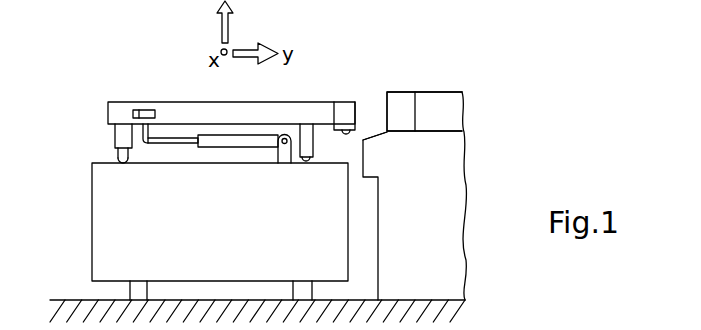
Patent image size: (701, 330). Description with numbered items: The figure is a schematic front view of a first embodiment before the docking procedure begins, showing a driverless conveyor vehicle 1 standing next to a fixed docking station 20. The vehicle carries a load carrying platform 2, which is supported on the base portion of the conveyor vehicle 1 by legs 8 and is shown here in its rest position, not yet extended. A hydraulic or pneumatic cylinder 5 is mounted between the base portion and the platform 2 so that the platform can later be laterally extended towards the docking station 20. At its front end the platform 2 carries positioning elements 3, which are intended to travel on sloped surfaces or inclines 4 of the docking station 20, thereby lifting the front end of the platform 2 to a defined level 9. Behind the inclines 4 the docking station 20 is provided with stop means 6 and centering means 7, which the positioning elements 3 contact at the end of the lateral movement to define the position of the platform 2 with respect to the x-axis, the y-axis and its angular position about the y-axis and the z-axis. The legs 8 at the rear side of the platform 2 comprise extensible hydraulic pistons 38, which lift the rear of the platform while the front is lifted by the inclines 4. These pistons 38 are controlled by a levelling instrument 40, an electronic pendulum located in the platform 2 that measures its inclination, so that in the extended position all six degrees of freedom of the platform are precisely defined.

The conveyor vehicle 1 is at (107, 192).
The load carrying platform 2 is at (108, 102).
The positioning elements 3 is at (348, 115).
The sloped surfaces or inclines 4 is at (377, 132).
The hydraulic or pneumatic cylinder 5 is at (192, 142).
The stop means 6 is at (445, 92).
The centering means 7 is at (424, 111).
The legs 8 is at (122, 133).
The defined level 9 is at (402, 129).
The docking station 20 is at (440, 162).
The hydraulic pistons 38 is at (120, 153).
The levelling instrument 40 is at (140, 110).